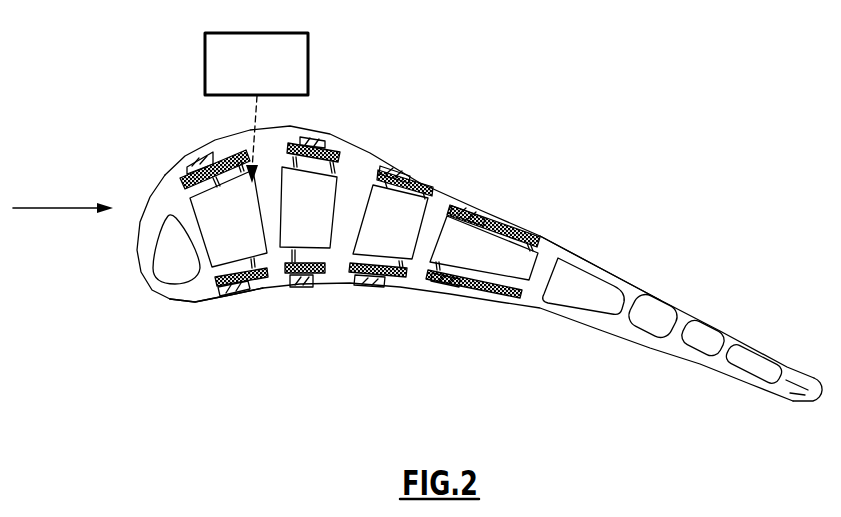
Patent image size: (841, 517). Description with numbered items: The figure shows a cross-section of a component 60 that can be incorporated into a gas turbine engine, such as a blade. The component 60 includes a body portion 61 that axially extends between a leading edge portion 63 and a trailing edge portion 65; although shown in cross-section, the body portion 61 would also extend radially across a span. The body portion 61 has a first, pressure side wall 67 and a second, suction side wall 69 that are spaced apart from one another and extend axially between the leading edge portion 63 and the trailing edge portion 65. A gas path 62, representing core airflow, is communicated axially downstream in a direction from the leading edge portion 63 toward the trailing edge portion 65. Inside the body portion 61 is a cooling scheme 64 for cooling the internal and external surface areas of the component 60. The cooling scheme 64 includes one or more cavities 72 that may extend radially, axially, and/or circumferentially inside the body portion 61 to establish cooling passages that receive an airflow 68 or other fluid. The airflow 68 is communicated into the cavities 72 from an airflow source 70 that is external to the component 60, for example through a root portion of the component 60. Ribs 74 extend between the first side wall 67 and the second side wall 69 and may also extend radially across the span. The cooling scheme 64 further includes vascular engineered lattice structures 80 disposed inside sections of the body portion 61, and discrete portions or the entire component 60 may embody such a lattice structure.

The component 60 is at (497, 141).
The body portion 61 is at (569, 236).
The gas path 62 is at (50, 209).
The leading edge portion 63 is at (130, 264).
The cooling scheme 64 is at (211, 298).
The trailing edge portion 65 is at (798, 412).
The first side wall 67 is at (340, 286).
The airflow 68 is at (256, 121).
The second side wall 69 is at (372, 153).
The airflow source 70 is at (310, 61).
The cavities 72 is at (187, 272).
The ribs 74 is at (543, 271).
The vascular engineered lattice structures 80 is at (210, 163).